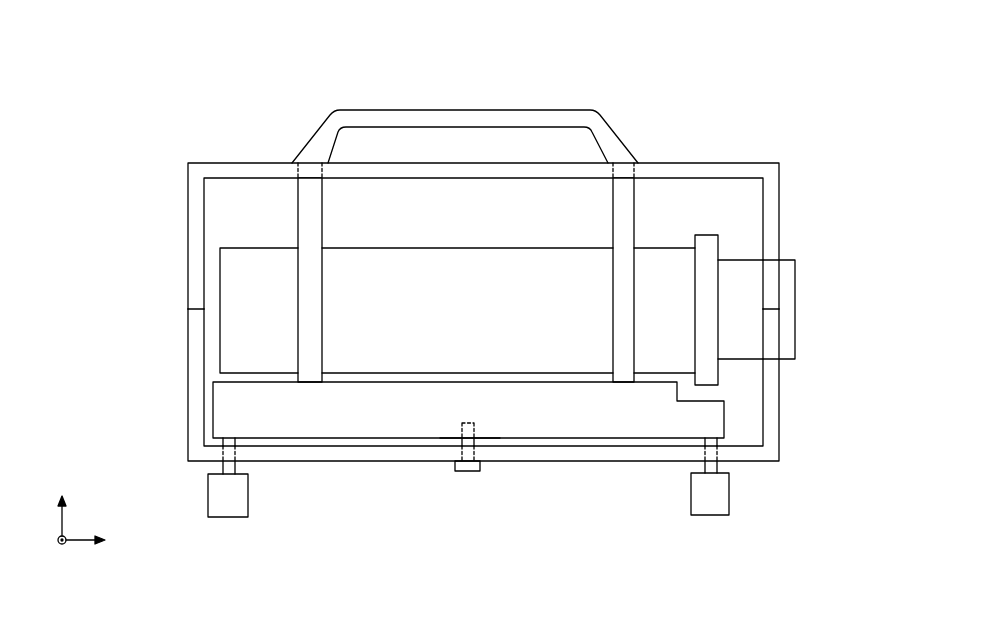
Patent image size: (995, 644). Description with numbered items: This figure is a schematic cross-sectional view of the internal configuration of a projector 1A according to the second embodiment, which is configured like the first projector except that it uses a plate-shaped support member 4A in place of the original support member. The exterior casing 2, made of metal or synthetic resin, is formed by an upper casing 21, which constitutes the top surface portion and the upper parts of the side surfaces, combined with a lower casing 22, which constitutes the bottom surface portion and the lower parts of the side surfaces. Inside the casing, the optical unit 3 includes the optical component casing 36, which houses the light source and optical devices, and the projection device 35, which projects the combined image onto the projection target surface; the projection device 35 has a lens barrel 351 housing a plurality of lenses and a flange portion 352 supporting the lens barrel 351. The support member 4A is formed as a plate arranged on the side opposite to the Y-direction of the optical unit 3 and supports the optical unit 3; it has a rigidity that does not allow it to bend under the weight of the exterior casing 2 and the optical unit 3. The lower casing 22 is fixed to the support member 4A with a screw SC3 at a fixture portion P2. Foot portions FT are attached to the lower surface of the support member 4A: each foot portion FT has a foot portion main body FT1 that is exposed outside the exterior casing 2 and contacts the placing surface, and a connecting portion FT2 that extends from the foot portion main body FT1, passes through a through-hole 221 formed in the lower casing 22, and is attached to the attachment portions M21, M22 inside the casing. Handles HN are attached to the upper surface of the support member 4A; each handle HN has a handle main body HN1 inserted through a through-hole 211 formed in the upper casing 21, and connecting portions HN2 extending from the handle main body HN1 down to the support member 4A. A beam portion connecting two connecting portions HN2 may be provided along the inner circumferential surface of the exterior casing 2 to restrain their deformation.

The projector 1A is at (800, 67).
The exterior casing 2 is at (752, 163).
The upper casing 21 is at (781, 180).
The through-hole 211 is at (316, 168).
The lower casing 22 is at (782, 392).
The through-hole 221 is at (220, 467).
The optical unit 3 is at (729, 244).
The projection device 35 is at (843, 283).
The lens barrel 351 is at (786, 294).
The flange portion 352 is at (718, 331).
The optical component casing 36 is at (470, 250).
The support member 4A is at (708, 417).
The fixture portion P2 is at (460, 439).
The screw SC3 is at (470, 472).
The attachment portion M21 is at (702, 449).
The attachment portion M22 is at (220, 451).
The foot portion FT is at (336, 483).
The foot portion main body FT1 is at (240, 497).
The connecting portion FT2 is at (236, 467).
The handle HN is at (533, 110).
The handle main body HN1 is at (453, 110).
The connecting portion HN2 is at (322, 207).